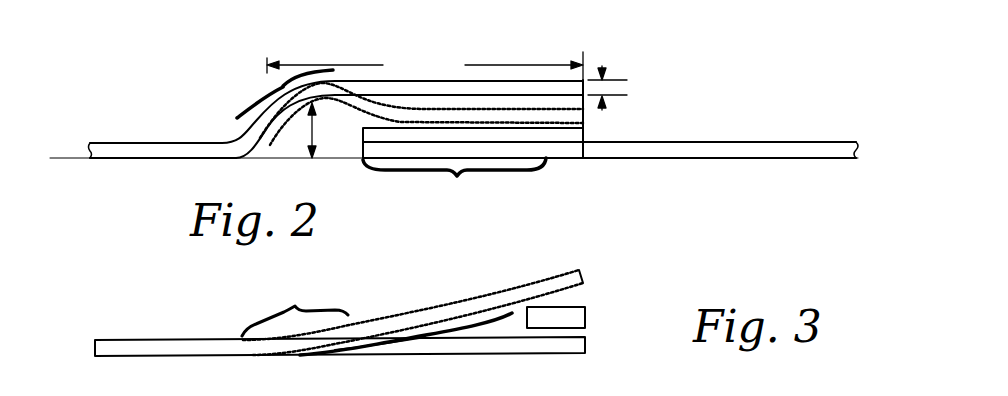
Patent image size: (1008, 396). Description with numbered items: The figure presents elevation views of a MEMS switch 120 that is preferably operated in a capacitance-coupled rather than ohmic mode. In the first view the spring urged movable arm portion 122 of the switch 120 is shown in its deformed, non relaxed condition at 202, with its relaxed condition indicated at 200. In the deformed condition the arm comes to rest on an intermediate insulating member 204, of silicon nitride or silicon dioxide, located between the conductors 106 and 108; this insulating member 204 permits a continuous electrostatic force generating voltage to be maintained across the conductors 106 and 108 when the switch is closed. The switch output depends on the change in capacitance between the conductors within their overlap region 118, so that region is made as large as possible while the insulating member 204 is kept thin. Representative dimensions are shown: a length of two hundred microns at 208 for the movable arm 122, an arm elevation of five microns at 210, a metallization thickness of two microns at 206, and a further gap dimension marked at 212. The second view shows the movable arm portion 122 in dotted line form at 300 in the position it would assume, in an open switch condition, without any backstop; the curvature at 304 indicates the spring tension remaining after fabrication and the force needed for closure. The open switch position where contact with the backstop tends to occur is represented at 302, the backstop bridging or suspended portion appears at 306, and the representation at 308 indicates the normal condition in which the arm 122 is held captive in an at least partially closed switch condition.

In FIG. 2, the conductor 106 is at (132, 142).
In FIG. 2, the conductor 108 is at (728, 157).
In FIG. 2, the conductor overlap region 118 is at (473, 164).
In FIG. 2, the MEMS switch 120 is at (203, 75).
In FIG. 2, the movable arm portion 122 is at (280, 81).
In FIG. 3, the movable arm portion 122 is at (295, 310).
In FIG. 2, the relaxed condition of the movable arm portion 200 is at (585, 72).
In FIG. 2, the deformed condition of the movable arm portion 202 is at (589, 111).
In FIG. 2, the insulating member 204 is at (586, 133).
In FIG. 2, the metallization thickness dimension 206 is at (626, 55).
In FIG. 2, the movable arm length dimension 208 is at (423, 57).
In FIG. 2, the movable arm elevation dimension 210 is at (318, 133).
In FIG. 2, the gap dimension 212 is at (347, 133).
In FIG. 3, the movable arm open position without backstop 300 is at (606, 256).
In FIG. 3, the open switch position of the movable arm 302 is at (584, 283).
In FIG. 3, the curvature of the movable arm portion 304 is at (417, 343).
In FIG. 3, the backstop member bridging portion 306 is at (586, 312).
In FIG. 3, the captive movable arm position 308 is at (606, 367).